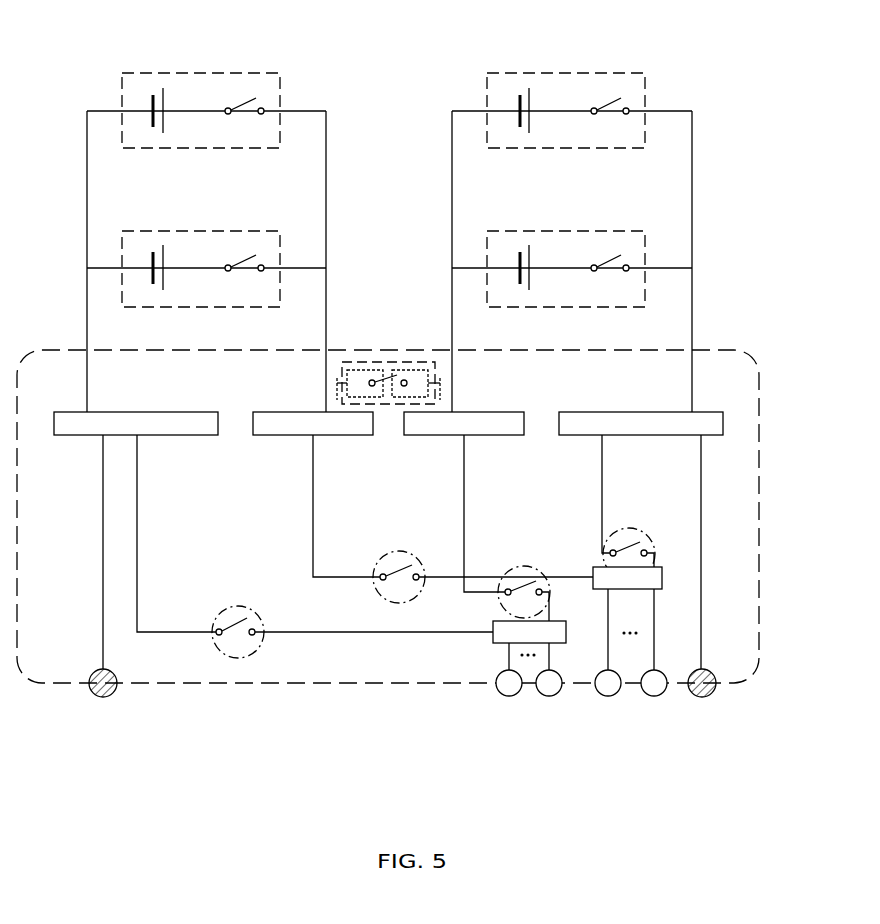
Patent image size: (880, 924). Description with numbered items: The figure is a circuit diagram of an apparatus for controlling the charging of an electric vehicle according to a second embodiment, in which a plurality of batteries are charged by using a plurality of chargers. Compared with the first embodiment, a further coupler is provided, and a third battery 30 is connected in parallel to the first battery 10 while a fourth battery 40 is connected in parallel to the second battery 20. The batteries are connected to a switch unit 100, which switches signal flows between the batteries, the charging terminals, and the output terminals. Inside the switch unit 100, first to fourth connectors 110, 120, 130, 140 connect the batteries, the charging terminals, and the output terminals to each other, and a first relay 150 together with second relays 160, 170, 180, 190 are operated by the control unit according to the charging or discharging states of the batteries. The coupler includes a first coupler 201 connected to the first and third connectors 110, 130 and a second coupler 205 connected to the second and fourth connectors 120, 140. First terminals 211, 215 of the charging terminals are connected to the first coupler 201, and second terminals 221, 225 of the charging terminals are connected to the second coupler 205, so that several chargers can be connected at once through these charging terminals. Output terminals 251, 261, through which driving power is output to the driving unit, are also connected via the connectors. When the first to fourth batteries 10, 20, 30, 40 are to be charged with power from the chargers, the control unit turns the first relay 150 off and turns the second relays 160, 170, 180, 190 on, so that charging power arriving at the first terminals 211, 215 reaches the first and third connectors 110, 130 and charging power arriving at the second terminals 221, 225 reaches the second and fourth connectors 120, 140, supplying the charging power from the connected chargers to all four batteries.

The first battery 10 is at (240, 231).
The second battery 20 is at (604, 231).
The third battery 30 is at (240, 73).
The fourth battery 40 is at (604, 73).
The switch unit 100 is at (729, 350).
The first connector 110 is at (185, 437).
The second connector 120 is at (343, 437).
The third connector 130 is at (427, 437).
The fourth connector 140 is at (573, 437).
The first relay 150 is at (386, 362).
The second relay 160 is at (238, 606).
The second relay 170 is at (399, 551).
The second relay 180 is at (525, 566).
The second relay 190 is at (626, 528).
The first coupler 201 is at (493, 639).
The second coupler 205 is at (662, 577).
The first terminal of charging terminal 211 is at (509, 697).
The first terminal of charging terminal 215 is at (549, 697).
The second terminal of charging terminal 221 is at (608, 697).
The second terminal of charging terminal 225 is at (654, 697).
The output terminal 251 is at (103, 697).
The output terminal 261 is at (702, 697).